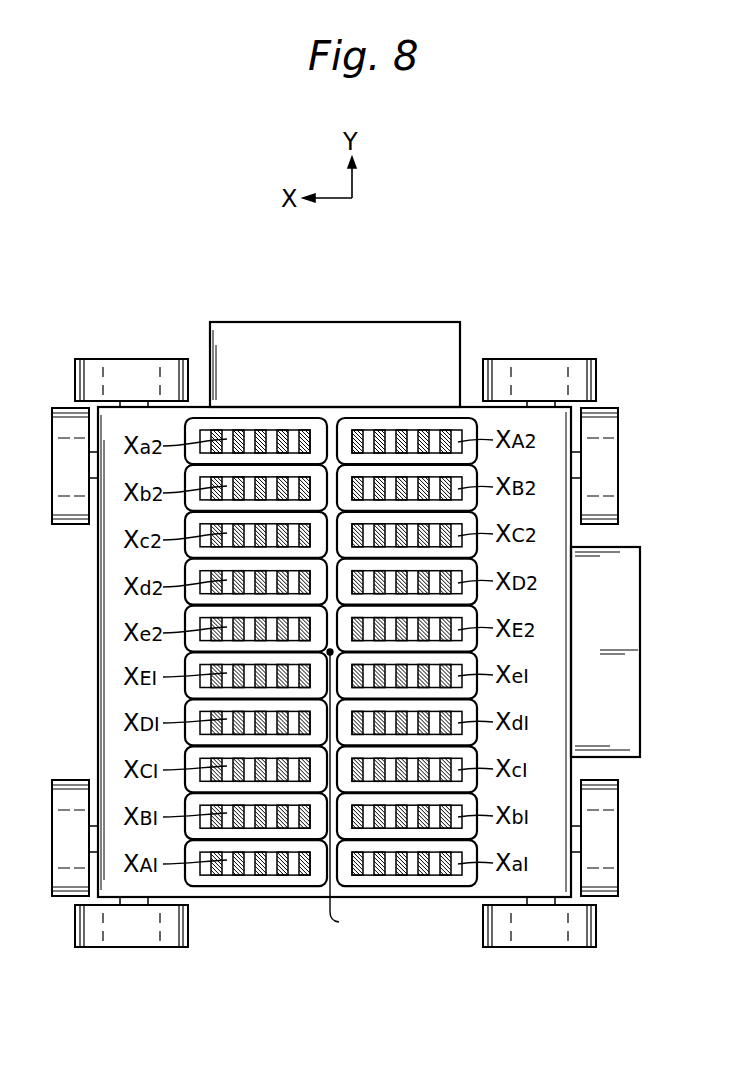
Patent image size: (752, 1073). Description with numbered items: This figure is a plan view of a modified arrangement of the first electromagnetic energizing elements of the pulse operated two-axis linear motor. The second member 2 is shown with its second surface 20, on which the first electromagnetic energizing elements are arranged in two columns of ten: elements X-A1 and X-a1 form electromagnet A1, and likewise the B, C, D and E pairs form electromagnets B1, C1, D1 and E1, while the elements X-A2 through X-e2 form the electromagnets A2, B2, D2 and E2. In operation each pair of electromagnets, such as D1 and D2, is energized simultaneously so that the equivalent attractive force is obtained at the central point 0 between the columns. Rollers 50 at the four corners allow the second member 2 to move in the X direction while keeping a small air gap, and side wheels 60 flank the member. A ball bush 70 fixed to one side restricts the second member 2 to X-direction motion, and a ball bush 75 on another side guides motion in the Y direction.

The second member 2 is at (98, 637).
The second surface 20 is at (560, 712).
The roller 50 is at (116, 362).
The side wheel 60 is at (62, 524).
The ball bush 70 is at (380, 322).
The ball bush 75 is at (624, 547).
The central point 0 is at (341, 793).